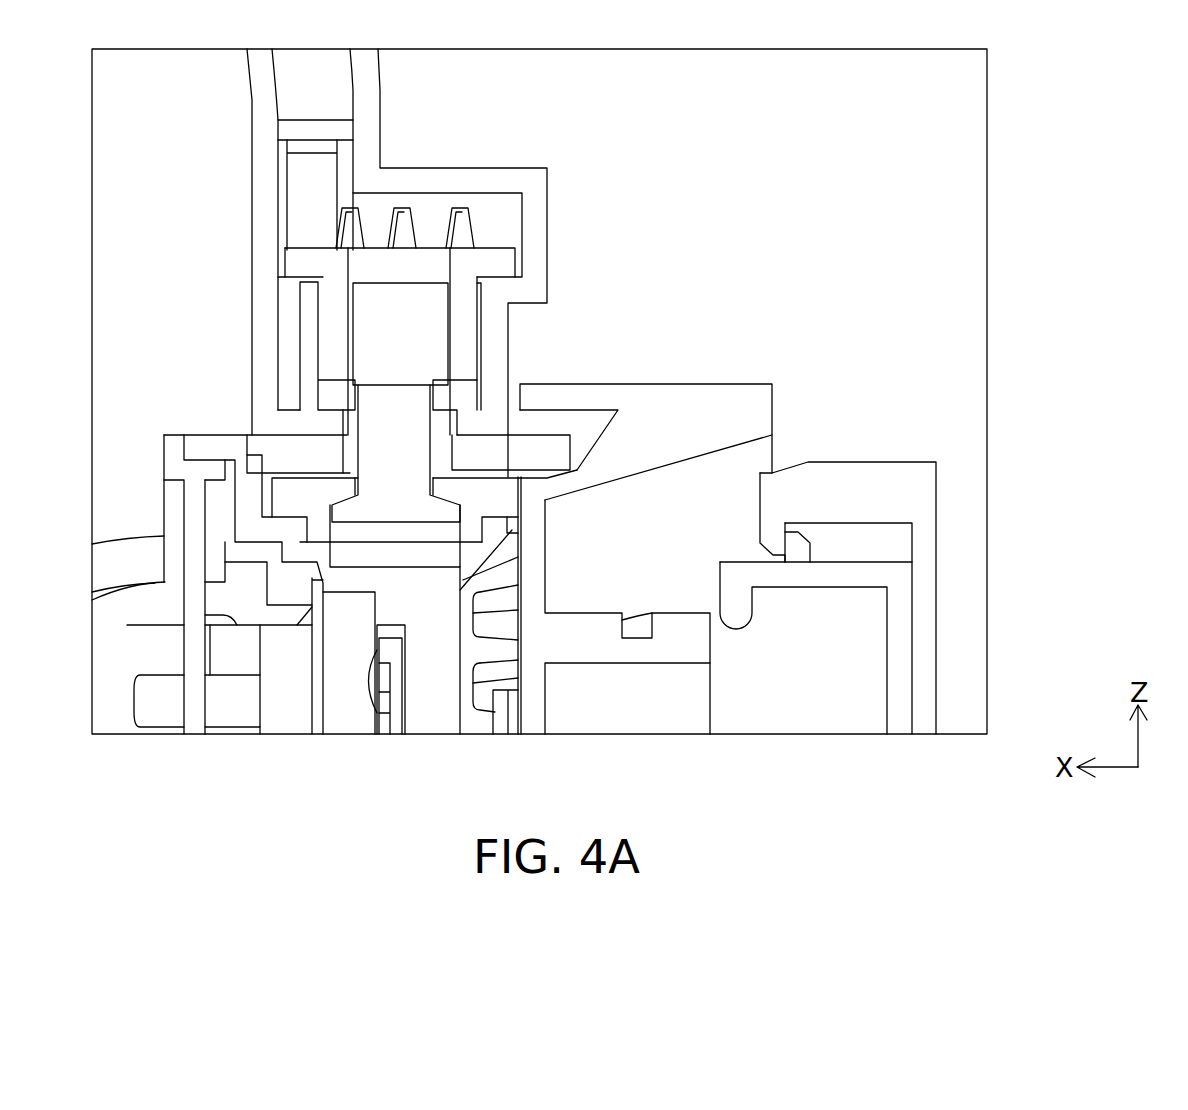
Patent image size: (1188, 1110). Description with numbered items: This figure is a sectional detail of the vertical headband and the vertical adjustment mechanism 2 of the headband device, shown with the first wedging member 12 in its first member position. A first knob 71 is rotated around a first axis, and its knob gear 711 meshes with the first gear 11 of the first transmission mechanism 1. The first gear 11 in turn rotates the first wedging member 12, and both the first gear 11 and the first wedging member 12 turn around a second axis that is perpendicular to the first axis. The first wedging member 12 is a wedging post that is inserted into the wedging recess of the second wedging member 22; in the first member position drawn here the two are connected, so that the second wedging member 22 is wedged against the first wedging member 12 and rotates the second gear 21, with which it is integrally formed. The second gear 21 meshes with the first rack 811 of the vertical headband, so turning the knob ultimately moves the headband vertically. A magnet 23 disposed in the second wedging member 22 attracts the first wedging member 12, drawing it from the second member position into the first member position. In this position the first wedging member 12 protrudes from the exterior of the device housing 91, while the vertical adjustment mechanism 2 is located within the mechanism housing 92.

The first transmission mechanism 1 is at (409, 610).
The first gear 11 is at (472, 500).
The first wedging member 12 is at (385, 455).
The vertical adjustment mechanism 2 is at (517, 314).
The second gear 21 is at (465, 232).
The second wedging member 22 is at (463, 298).
The magnet 23 is at (425, 326).
The first knob 71 is at (752, 402).
The knob gear 711 is at (512, 567).
The first rack 811 is at (308, 204).
The device housing 91 is at (203, 447).
The mechanism housing 92 is at (262, 95).